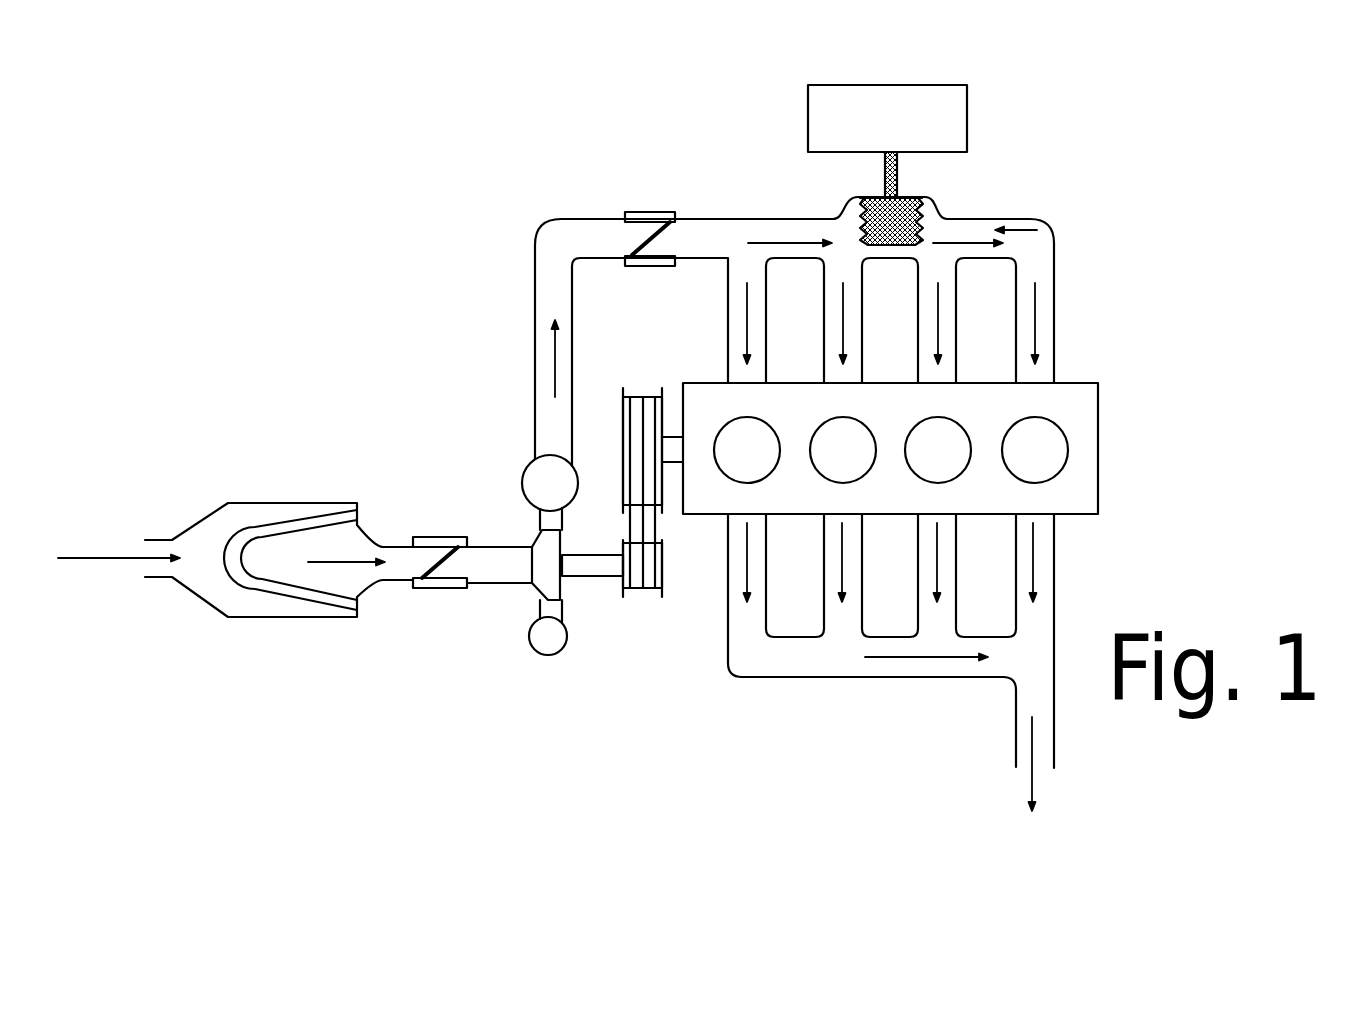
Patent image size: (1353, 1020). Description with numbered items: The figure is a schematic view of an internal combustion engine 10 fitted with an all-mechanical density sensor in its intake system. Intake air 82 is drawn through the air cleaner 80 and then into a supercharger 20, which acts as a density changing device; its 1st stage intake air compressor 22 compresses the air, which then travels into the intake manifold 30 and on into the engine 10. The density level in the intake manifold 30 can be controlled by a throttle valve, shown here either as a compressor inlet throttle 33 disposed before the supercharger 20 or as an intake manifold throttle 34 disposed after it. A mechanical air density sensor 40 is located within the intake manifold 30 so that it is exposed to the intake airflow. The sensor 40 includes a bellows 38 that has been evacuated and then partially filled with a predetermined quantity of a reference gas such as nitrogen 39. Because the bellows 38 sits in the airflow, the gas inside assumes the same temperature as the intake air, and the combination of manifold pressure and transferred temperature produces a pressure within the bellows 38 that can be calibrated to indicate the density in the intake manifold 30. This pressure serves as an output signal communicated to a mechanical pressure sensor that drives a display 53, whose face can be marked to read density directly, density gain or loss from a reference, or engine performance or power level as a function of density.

The internal combustion engine 10 is at (884, 531).
The supercharger 20 is at (643, 562).
The 1st stage intake air compressor 22 is at (611, 631).
The intake manifold 30 is at (846, 331).
The compressor inlet throttle 33 is at (457, 522).
The intake manifold throttle 34 is at (696, 203).
The bellows 38 is at (943, 207).
The nitrogen 39 is at (955, 168).
The mechanical air density sensor 40 is at (849, 179).
The display 53 is at (837, 118).
The air cleaner 80 is at (265, 625).
The intake air 82 is at (119, 594).